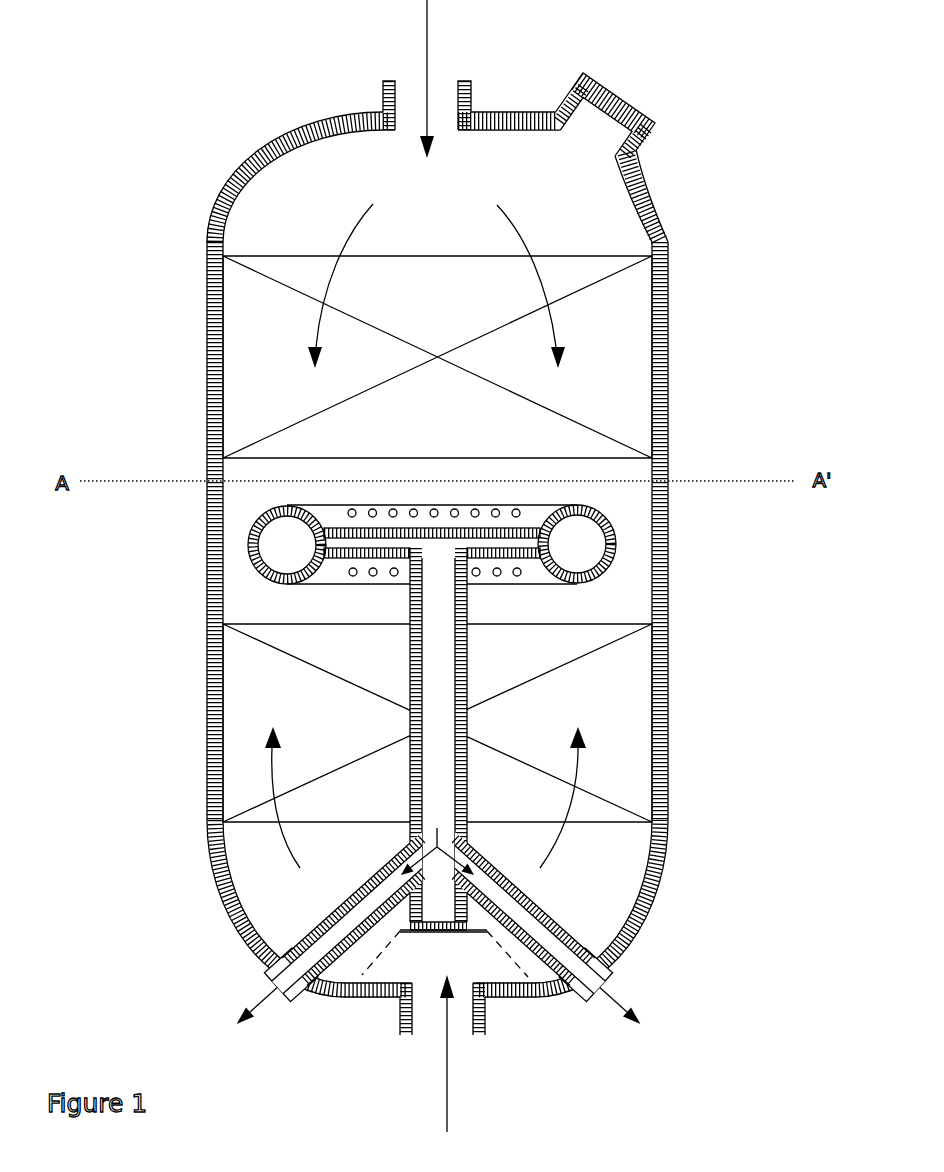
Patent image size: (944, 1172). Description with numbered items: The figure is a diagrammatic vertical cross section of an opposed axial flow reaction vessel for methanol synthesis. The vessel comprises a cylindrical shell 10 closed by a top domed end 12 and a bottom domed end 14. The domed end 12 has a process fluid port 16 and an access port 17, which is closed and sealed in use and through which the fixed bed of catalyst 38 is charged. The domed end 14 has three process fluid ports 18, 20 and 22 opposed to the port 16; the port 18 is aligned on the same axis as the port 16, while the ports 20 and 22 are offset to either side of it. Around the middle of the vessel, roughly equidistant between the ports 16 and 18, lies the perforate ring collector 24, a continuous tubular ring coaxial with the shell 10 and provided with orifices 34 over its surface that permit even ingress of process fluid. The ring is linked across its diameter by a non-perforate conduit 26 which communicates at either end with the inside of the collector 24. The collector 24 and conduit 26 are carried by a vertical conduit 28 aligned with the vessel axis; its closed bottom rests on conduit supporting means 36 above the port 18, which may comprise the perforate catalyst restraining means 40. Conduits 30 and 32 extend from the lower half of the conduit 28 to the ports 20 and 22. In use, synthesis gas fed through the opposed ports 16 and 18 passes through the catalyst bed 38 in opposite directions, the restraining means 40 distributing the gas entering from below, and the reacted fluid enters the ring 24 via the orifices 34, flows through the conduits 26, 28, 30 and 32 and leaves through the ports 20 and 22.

The cylindrical shell 10 is at (207, 407).
The domed end 12 is at (248, 157).
The domed end 14 is at (237, 930).
The process fluid port 16 is at (384, 80).
The access port 17 is at (644, 149).
The process fluid port 18 is at (487, 1030).
The process fluid port 20 is at (312, 953).
The process fluid port 22 is at (623, 972).
The perforate ring collector 24 is at (248, 547).
The non-perforate conduit 26 is at (325, 560).
The vertical conduit 28 is at (410, 663).
The conduit 30 is at (330, 915).
The conduit 32 is at (548, 910).
The orifices 34 is at (603, 572).
The conduit supporting means 36 is at (435, 932).
The fixed bed of catalyst 38 is at (603, 337).
The perforate catalyst restraining means 40 is at (387, 943).